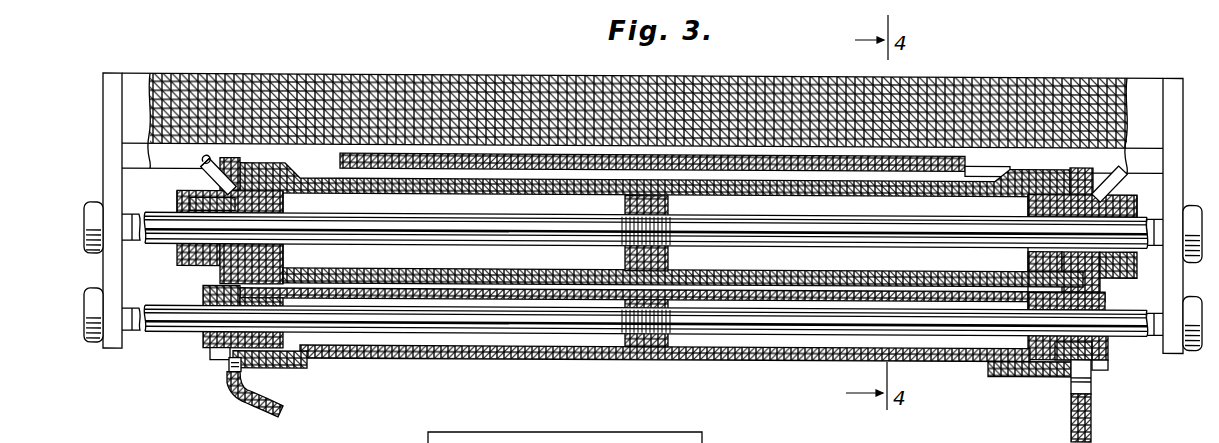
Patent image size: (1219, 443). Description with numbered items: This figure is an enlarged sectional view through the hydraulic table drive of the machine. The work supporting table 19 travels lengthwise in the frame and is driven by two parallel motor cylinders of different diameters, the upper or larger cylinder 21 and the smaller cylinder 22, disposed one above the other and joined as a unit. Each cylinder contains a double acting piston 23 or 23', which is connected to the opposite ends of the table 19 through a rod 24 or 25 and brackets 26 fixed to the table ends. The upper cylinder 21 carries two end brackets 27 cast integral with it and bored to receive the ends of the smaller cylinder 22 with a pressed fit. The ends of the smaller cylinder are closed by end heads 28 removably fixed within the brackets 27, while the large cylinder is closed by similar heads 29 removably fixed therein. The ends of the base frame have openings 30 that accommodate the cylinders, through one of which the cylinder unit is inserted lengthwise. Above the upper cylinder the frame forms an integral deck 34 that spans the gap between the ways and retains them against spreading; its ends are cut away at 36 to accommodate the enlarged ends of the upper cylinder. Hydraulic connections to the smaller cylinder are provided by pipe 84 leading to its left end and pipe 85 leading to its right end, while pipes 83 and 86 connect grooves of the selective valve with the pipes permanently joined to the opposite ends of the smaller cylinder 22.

The work supporting table 19 is at (395, 74).
The upper motor cylinder 21 is at (487, 186).
The smaller motor cylinder 22 is at (566, 355).
The double acting piston 23 is at (671, 233).
The double acting piston 23' is at (643, 349).
The piston rod 24 is at (431, 230).
The piston rod 25 is at (373, 322).
The bracket 26 is at (108, 178).
The end bracket 27 is at (279, 366).
The end head 28 is at (218, 357).
The end head 29 is at (200, 267).
The opening 30 is at (230, 385).
The deck 34 is at (482, 165).
The cut away 36 is at (967, 160).
The pipe 83 is at (241, 366).
The pipe 84 is at (203, 167).
The pipe 85 is at (1108, 180).
The pipe 86 is at (1078, 378).